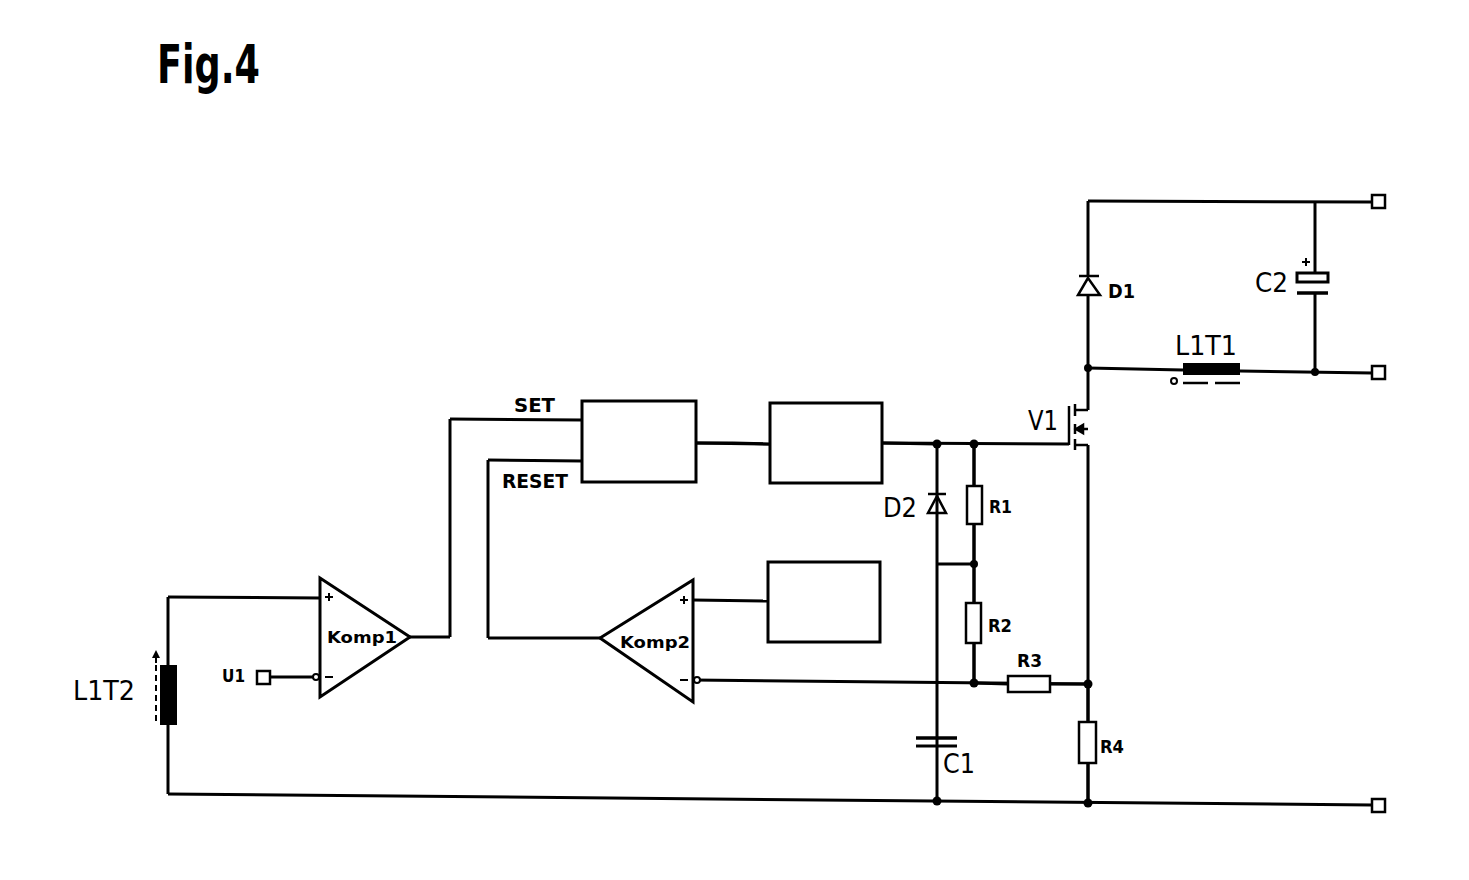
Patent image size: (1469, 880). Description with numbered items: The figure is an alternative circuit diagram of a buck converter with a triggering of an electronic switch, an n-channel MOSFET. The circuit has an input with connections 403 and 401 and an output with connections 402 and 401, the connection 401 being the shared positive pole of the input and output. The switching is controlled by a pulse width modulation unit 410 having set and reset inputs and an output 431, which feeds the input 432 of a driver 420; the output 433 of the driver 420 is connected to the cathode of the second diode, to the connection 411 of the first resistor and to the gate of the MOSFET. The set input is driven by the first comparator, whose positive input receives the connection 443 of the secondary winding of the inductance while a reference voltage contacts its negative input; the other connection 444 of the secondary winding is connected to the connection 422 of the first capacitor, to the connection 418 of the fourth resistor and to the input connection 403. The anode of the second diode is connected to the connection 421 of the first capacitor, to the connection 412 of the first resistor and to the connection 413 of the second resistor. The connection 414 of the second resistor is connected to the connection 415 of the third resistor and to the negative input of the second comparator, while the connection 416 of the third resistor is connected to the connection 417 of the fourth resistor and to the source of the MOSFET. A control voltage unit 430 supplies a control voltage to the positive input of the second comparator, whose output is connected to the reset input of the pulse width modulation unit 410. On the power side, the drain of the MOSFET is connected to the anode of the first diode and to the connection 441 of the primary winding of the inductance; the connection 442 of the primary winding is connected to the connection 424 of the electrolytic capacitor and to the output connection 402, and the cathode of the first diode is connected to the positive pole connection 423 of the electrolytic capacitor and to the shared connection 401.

The connection 401 is at (1405, 208).
The connection 402 is at (1405, 375).
The connection 403 is at (1405, 806).
The pulse width modulation unit 410 is at (639, 441).
The connection 411 is at (998, 465).
The connection 412 is at (998, 544).
The connection 413 is at (997, 585).
The connection 414 is at (973, 655).
The connection 415 is at (980, 702).
The connection 416 is at (1060, 692).
The connection 417 is at (1114, 703).
The connection 418 is at (1114, 783).
The driver 420 is at (826, 443).
The connection 421 is at (919, 721).
The connection 422 is at (919, 762).
The connection 423 is at (1339, 267).
The connection 424 is at (1339, 308).
The control voltage unit 430 is at (824, 602).
The output 431 is at (698, 437).
The input 432 is at (762, 448).
The output 433 is at (885, 435).
The connection 441 is at (1175, 394).
The connection 442 is at (1241, 394).
The connection 443 is at (146, 657).
The connection 444 is at (146, 725).